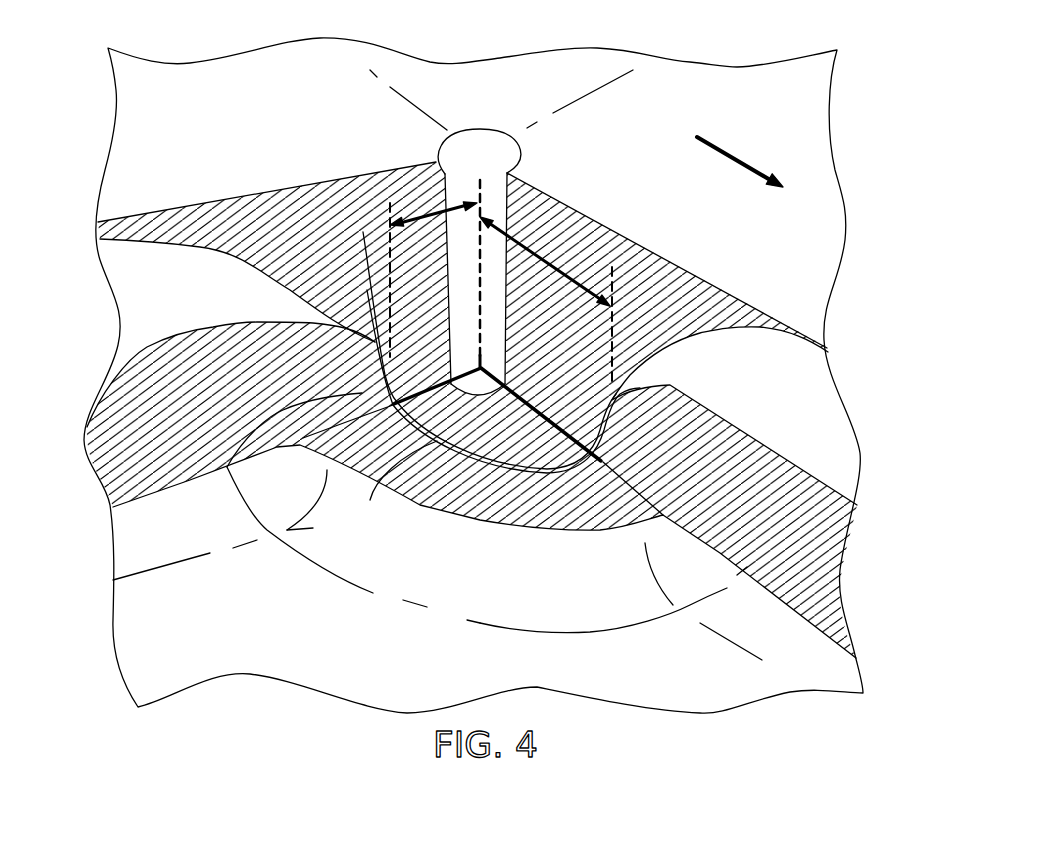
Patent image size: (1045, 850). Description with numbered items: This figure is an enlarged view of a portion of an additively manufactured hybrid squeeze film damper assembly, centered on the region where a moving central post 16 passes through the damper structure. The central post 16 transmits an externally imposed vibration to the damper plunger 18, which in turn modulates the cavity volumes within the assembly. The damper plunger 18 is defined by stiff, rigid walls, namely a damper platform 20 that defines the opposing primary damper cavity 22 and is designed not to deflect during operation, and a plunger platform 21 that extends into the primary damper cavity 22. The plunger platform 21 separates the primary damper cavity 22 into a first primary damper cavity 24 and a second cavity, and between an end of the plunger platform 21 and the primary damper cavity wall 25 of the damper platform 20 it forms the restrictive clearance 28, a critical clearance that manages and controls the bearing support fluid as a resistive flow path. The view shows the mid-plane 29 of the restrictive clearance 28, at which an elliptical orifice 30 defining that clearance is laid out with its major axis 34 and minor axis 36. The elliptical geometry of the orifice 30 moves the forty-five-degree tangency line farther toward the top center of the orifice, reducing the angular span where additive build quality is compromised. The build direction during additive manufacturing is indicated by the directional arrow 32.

The central post 16 is at (482, 150).
The damper plunger 18 is at (437, 490).
The damper platform 20 is at (652, 268).
The plunger platform 21 is at (484, 531).
The primary damper cavity 22 is at (207, 298).
The first primary damper cavity 24 is at (778, 367).
The primary damper cavity wall 25 is at (367, 290).
The restrictive clearance 28 is at (363, 355).
The mid-plane 29 is at (227, 467).
The elliptical orifice 30 is at (370, 500).
The directional arrow 32 is at (738, 160).
The major axis 34 is at (565, 272).
The minor axis 36 is at (420, 218).